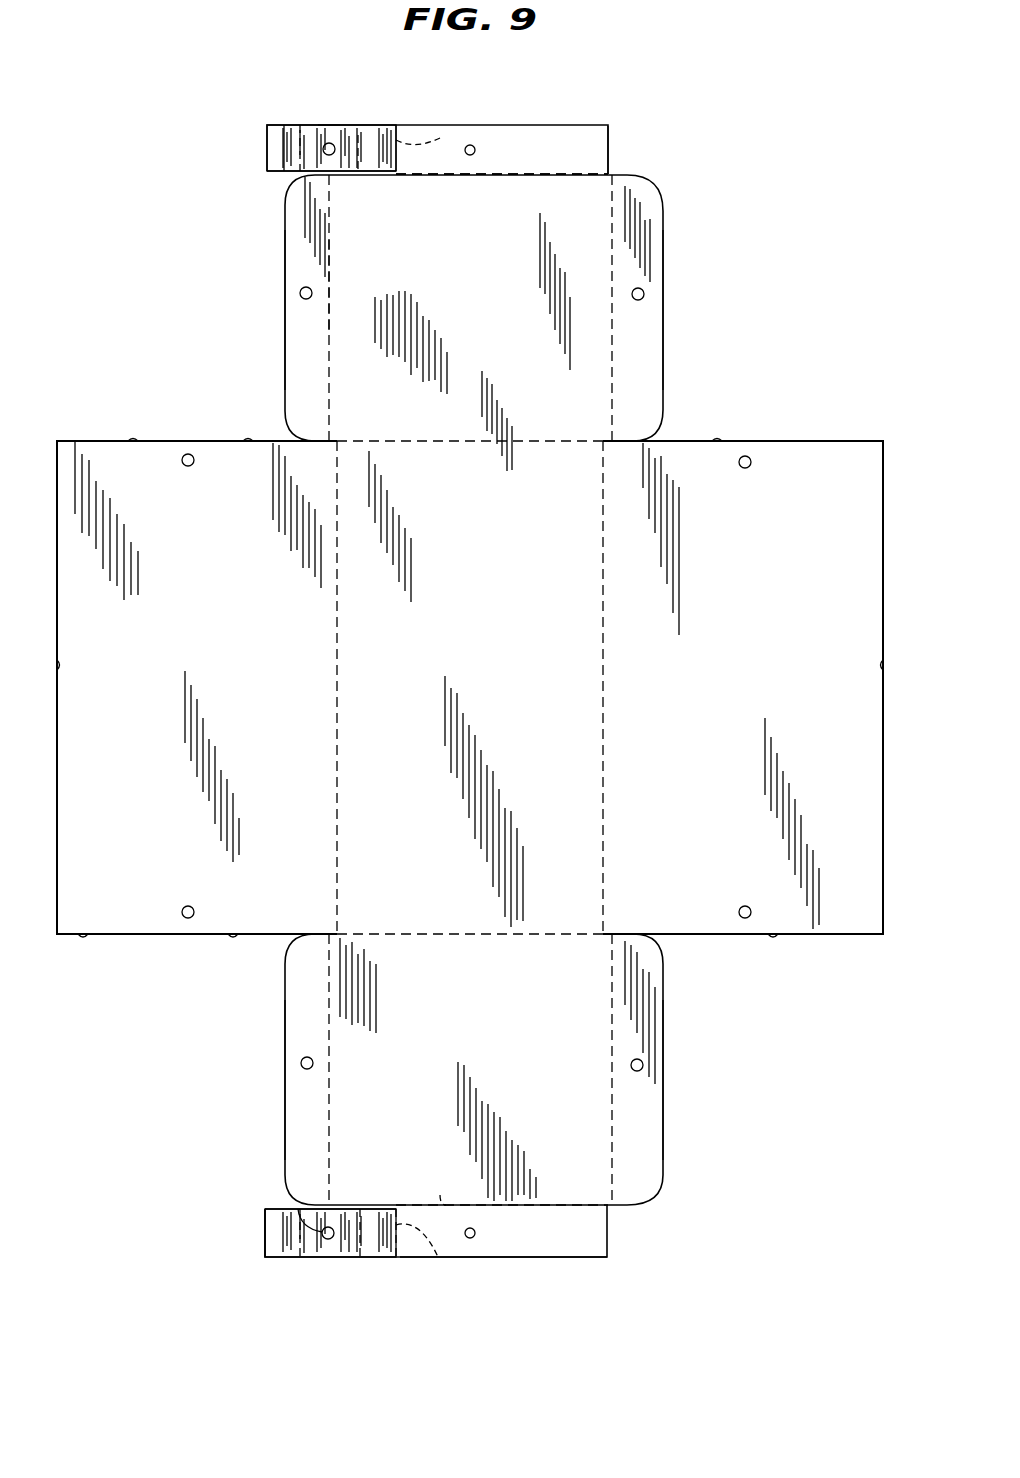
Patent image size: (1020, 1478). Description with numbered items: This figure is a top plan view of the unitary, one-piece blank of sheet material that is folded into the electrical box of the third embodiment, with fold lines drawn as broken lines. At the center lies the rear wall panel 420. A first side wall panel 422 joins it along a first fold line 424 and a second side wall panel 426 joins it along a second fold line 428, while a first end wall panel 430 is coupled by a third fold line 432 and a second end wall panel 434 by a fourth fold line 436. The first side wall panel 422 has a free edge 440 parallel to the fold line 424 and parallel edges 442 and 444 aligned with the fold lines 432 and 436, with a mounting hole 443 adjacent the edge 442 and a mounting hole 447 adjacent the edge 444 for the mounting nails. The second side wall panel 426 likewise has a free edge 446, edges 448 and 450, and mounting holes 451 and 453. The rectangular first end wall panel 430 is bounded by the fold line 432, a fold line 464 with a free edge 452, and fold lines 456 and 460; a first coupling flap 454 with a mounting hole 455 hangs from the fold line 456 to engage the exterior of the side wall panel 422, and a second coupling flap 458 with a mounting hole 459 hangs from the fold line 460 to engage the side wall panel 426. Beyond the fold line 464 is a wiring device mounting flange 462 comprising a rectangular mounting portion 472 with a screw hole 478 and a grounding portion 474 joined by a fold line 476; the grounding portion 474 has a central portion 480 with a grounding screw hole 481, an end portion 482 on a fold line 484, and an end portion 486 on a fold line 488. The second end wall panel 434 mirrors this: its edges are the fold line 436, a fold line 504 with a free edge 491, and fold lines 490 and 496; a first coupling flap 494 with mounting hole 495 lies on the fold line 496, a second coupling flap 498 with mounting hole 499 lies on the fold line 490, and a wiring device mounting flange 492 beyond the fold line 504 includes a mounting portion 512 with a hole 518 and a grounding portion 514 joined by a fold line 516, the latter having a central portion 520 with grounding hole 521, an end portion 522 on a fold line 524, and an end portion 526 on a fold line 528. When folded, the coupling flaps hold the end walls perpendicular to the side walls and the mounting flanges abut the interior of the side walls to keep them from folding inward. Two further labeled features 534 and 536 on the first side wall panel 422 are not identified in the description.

The rear wall panel 420 is at (446, 649).
The first side wall panel 422 is at (197, 687).
The first fold line 424 is at (340, 660).
The second side wall panel 426 is at (743, 687).
The second fold line 428 is at (604, 655).
The first end wall panel 430 is at (474, 308).
The third fold line 432 is at (422, 441).
The second end wall panel 434 is at (474, 1069).
The fourth fold line 436 is at (492, 934).
The free edge 440 is at (57, 664).
The edge 442 is at (135, 441).
The mounting hole 443 is at (193, 465).
The edge 444 is at (83, 934).
The free edge 446 is at (883, 664).
The mounting hole 447 is at (186, 906).
The edge 448 is at (717, 441).
The edge 450 is at (773, 934).
The mounting hole 451 is at (750, 466).
The free edge 452 is at (338, 175).
The mounting hole 453 is at (740, 907).
The first coupling flap 454 is at (285, 260).
The mounting hole 455 is at (312, 291).
The fold line 456 is at (331, 207).
The second coupling flap 458 is at (663, 270).
The mounting hole 459 is at (644, 294).
The fold line 460 is at (612, 375).
The wiring device mounting flange 462 is at (610, 150).
The fold line 464 is at (473, 176).
The mounting portion 472 is at (437, 149).
The grounding portion 474 is at (266, 132).
The fold line 476 is at (440, 138).
The hole 478 is at (476, 149).
The first or central portion 480 is at (325, 126).
The mounting hole 481 is at (333, 155).
The second or end portion 482 is at (288, 126).
The fold line 484 is at (300, 125).
The third or end portion 486 is at (394, 129).
The fold line 488 is at (358, 135).
The fold line 490 is at (612, 1062).
The free edge 491 is at (362, 1205).
The wiring device mounting flange 492 is at (573, 1260).
The first coupling flap 494 is at (285, 1093).
The mounting hole 495 is at (313, 1063).
The fold line 496 is at (331, 1098).
The second coupling flap 498 is at (663, 1090).
The mounting hole 499 is at (632, 1069).
The fold line 504 is at (440, 1195).
The mounting portion 512 is at (436, 1231).
The grounding portion 514 is at (277, 1262).
The fold line 516 is at (438, 1257).
The hole 518 is at (472, 1238).
The first or central portion 520 is at (326, 1257).
The mounting hole 521 is at (305, 1228).
The second or end portion 522 is at (267, 1258).
The fold line 524 is at (300, 1257).
The third or end portion 526 is at (370, 1257).
The fold line 528 is at (366, 1257).
The notch 534 is at (248, 441).
The notch 536 is at (233, 934).